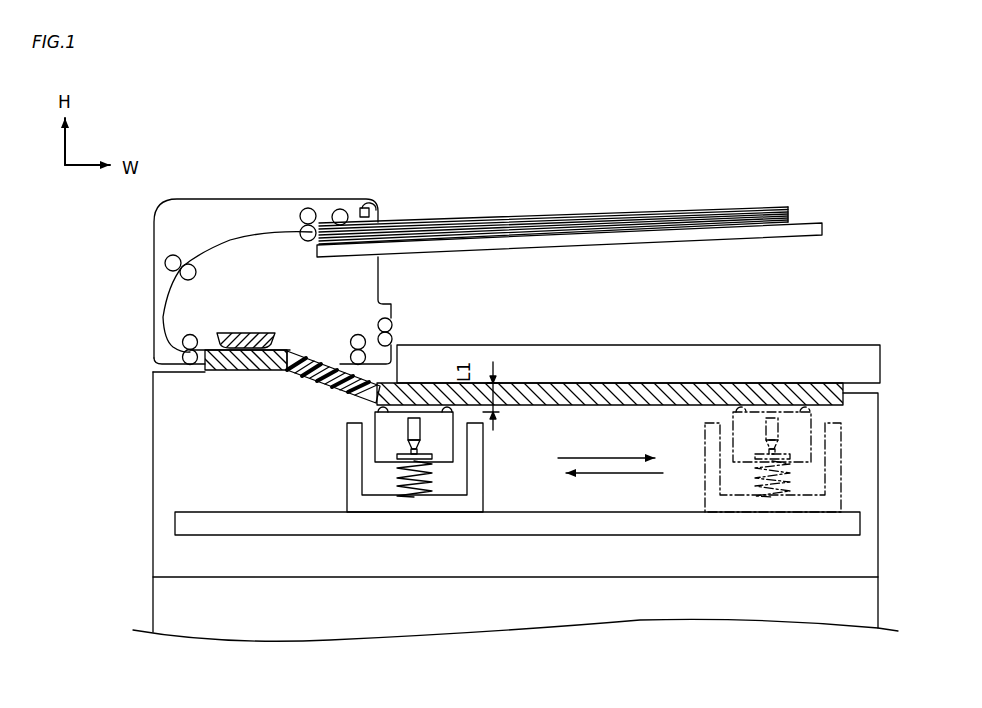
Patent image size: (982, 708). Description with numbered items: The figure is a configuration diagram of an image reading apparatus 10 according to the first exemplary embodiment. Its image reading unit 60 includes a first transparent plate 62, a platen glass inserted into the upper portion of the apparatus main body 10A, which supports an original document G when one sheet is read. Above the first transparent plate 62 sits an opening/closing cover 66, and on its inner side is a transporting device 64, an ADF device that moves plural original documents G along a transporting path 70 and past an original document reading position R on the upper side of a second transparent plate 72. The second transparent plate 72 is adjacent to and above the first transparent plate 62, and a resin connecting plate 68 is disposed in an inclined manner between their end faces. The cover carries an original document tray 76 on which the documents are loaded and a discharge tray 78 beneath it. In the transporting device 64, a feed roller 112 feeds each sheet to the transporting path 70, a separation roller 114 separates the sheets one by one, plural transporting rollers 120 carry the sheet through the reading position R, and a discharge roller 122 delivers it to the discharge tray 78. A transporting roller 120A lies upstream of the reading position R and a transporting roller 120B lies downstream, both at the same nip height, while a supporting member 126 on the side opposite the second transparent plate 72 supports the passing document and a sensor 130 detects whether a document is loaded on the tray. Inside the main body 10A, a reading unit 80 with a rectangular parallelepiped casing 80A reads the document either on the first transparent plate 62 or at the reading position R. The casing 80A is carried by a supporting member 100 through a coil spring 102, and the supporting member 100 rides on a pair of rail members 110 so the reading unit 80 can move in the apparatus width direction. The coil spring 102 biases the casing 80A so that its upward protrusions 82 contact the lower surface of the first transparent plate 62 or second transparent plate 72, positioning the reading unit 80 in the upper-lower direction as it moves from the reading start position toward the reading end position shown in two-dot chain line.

The image reading apparatus 10 is at (940, 165).
The apparatus main body 10A is at (878, 488).
The image reading unit 60 is at (907, 296).
The first transparent plate 62 is at (641, 405).
The transporting device 64 is at (220, 217).
The opening/closing cover 66 is at (140, 303).
The connecting plate 68 is at (300, 376).
The transporting path 70 is at (258, 233).
The second transparent plate 72 is at (237, 371).
The original document tray 76 is at (812, 237).
The discharge tray 78 is at (858, 352).
The reading unit 80 is at (423, 387).
The casing 80A is at (453, 452).
The protrusions 82 is at (383, 404).
The supporting member 100 is at (483, 487).
The coil spring 102 is at (428, 488).
The rail members 110 is at (670, 536).
The feed roller 112 is at (340, 209).
The separation roller 114 is at (307, 208).
The transporting rollers 120 is at (165, 262).
The transporting roller 120A is at (192, 335).
The transporting roller 120B is at (352, 336).
The discharge roller 122 is at (394, 312).
The supporting member 126 is at (243, 333).
The sensor 130 is at (372, 204).
The original document G is at (647, 213).
The original document reading position R is at (250, 347).